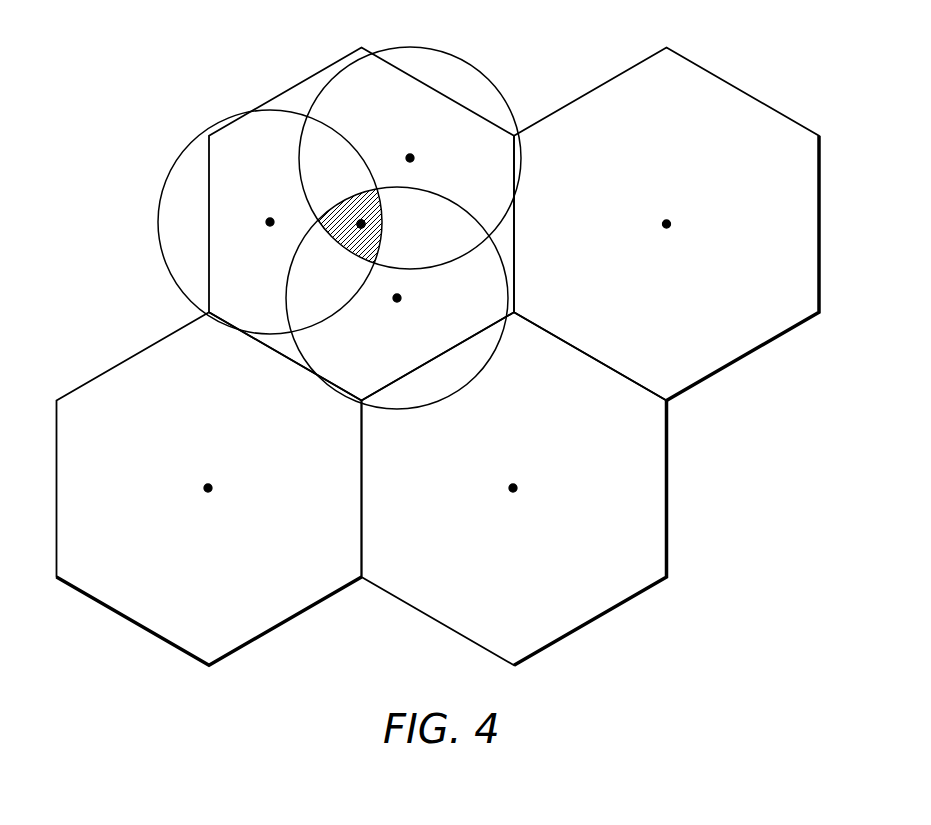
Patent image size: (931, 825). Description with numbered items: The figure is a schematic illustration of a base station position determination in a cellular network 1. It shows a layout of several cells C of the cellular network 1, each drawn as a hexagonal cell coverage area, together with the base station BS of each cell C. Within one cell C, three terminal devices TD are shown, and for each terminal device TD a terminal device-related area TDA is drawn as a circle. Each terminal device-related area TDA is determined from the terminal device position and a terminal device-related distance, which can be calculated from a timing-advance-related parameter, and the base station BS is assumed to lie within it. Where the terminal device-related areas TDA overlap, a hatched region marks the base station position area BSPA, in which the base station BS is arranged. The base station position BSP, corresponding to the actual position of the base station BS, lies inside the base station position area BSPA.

The cellular network 1 is at (438, 361).
The cell C is at (298, 83).
The base station BS is at (364, 224).
The terminal device TD is at (270, 216).
The terminal device-related area TDA is at (468, 62).
The base station position BSP is at (353, 236).
The base station position area BSPA is at (350, 206).